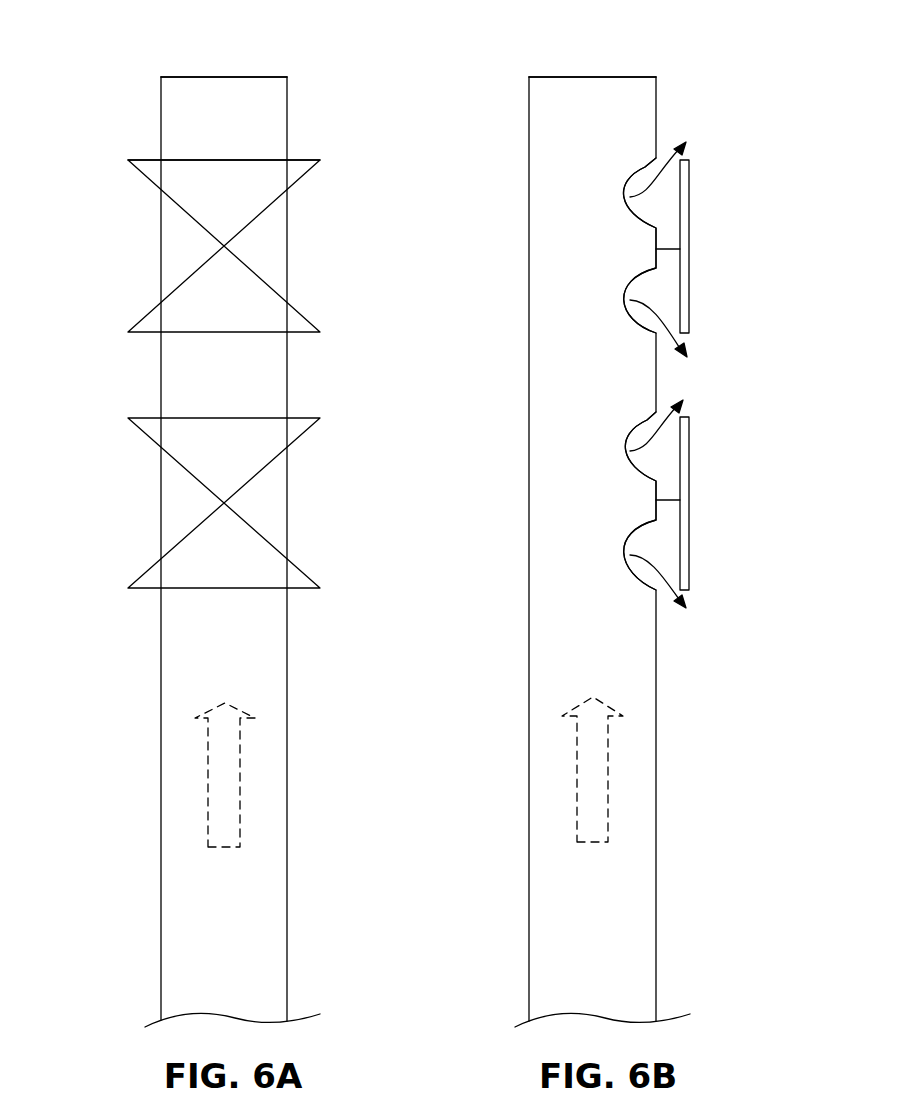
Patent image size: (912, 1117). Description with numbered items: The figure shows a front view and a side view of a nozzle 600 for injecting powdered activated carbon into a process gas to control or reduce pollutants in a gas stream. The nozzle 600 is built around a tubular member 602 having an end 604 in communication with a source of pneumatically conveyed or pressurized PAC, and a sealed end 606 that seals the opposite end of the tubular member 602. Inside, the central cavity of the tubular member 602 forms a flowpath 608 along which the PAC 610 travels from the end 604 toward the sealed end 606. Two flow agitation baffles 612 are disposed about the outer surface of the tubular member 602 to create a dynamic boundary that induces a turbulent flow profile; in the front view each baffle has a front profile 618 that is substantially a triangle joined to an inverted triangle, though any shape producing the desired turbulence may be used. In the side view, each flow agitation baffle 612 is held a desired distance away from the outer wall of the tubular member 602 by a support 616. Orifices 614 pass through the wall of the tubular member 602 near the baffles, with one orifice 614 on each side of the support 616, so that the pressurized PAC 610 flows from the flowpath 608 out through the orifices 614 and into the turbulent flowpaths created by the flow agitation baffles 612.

In FIG. 6A, the nozzle 600 is at (350, 216).
In FIG. 6B, the nozzle 600 is at (773, 188).
In FIG. 6A, the tubular member 602 is at (160, 658).
In FIG. 6B, the tubular member 602 is at (530, 700).
In FIG. 6A, the end 604 is at (133, 997).
In FIG. 6B, the end 604 is at (507, 997).
In FIG. 6A, the sealed end 606 is at (297, 98).
In FIG. 6B, the sealed end 606 is at (678, 97).
In FIG. 6A, the flowpath 608 is at (208, 662).
In FIG. 6B, the flowpath 608 is at (561, 693).
In FIG. 6A, the PAC 610 is at (220, 803).
In FIG. 6B, the PAC 610 is at (668, 337).
In FIG. 6A, the flow agitation baffle 612 is at (205, 289).
In FIG. 6B, the flow agitation baffle 612 is at (690, 264).
In FIG. 6B, the orifice 614 is at (636, 179).
In FIG. 6B, the support 616 is at (674, 254).
In FIG. 6A, the front profile 618 is at (176, 178).